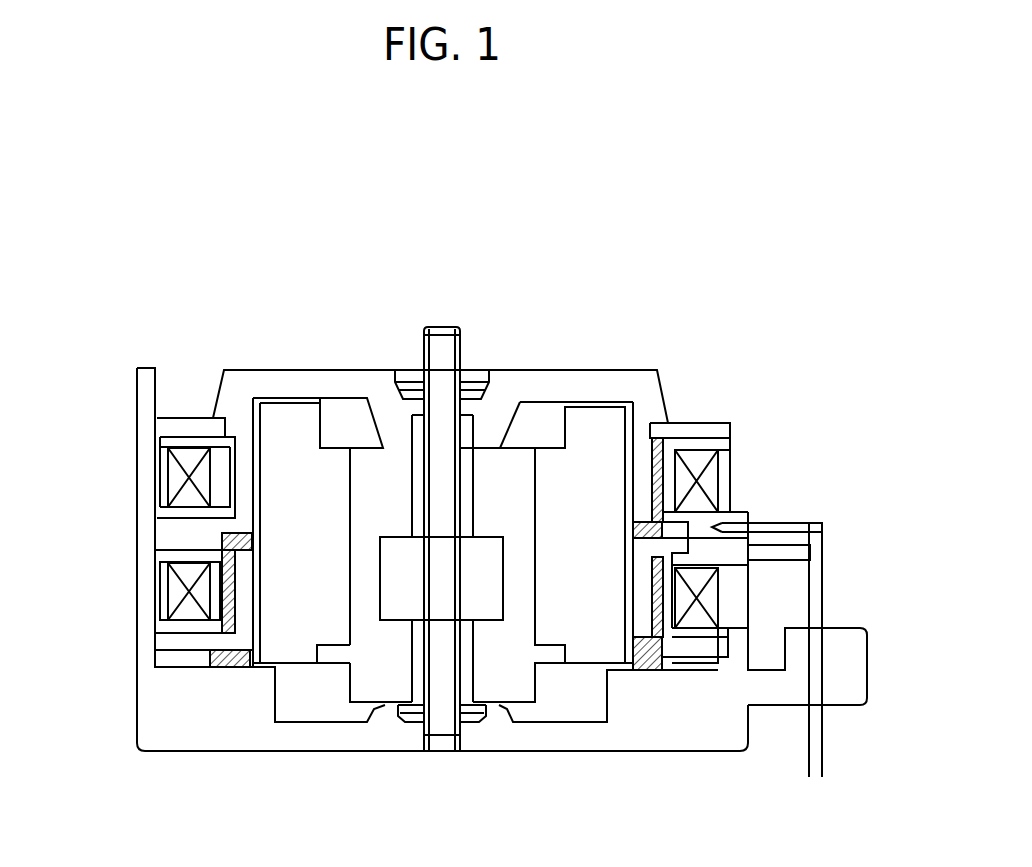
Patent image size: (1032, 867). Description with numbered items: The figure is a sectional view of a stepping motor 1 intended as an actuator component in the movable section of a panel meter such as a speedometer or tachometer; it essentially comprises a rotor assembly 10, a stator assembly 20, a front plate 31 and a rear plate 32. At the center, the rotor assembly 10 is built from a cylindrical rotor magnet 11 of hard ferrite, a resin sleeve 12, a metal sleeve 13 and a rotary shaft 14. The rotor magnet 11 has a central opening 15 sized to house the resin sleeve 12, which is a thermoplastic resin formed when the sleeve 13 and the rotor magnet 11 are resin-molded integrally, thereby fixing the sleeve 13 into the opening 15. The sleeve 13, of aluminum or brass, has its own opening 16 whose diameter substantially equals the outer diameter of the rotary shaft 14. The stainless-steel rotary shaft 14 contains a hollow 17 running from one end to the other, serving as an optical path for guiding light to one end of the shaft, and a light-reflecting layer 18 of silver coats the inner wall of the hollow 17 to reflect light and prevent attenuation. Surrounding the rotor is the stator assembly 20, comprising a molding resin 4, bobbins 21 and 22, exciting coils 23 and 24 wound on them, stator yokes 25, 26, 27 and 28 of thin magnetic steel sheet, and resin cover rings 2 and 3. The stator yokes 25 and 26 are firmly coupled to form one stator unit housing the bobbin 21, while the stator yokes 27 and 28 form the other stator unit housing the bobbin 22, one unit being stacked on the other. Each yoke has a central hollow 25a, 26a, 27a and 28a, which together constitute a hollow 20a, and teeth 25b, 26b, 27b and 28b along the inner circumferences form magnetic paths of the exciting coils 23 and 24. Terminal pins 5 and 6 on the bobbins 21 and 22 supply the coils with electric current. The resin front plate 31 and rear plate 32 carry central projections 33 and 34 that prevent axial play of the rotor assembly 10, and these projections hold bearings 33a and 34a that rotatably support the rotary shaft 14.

The stepping motor 1 is at (531, 250).
The cover ring 2 is at (727, 485).
The cover ring 3 is at (725, 616).
The molding resin 4 is at (730, 456).
The terminal pin 5 is at (822, 527).
The terminal pin 6 is at (822, 555).
The rotor assembly 10 is at (520, 698).
The cylindrical rotor magnet 11 is at (272, 398).
The resin sleeve 12 is at (366, 462).
The sleeve 13 is at (484, 535).
The rotary shaft 14 is at (433, 326).
The opening 15 is at (349, 632).
The opening 16 is at (421, 585).
The hollow 17 is at (440, 736).
The light-reflecting layer 18 is at (448, 343).
The stator assembly 20 is at (165, 336).
The hollow 20a is at (332, 410).
The bobbin 21 is at (749, 508).
The bobbin 22 is at (668, 580).
The exciting coil 23 is at (178, 478).
The exciting coil 24 is at (178, 590).
The stator yoke 25 is at (198, 428).
The hollow 25a is at (644, 466).
The teeth 25b is at (659, 440).
The stator yoke 26 is at (148, 392).
The hollow 26a is at (178, 447).
The teeth 26b is at (241, 507).
The stator yoke 27 is at (148, 547).
The hollow 27a is at (630, 556).
The teeth 27b is at (645, 670).
The stator yoke 28 is at (720, 648).
The hollow 28a is at (248, 620).
The teeth 28b is at (241, 645).
The front plate 31 is at (602, 383).
The rear plate 32 is at (175, 740).
The projection 33 is at (399, 412).
The bearing 33a is at (480, 390).
The projection 34 is at (390, 718).
The bearing 34a is at (474, 716).